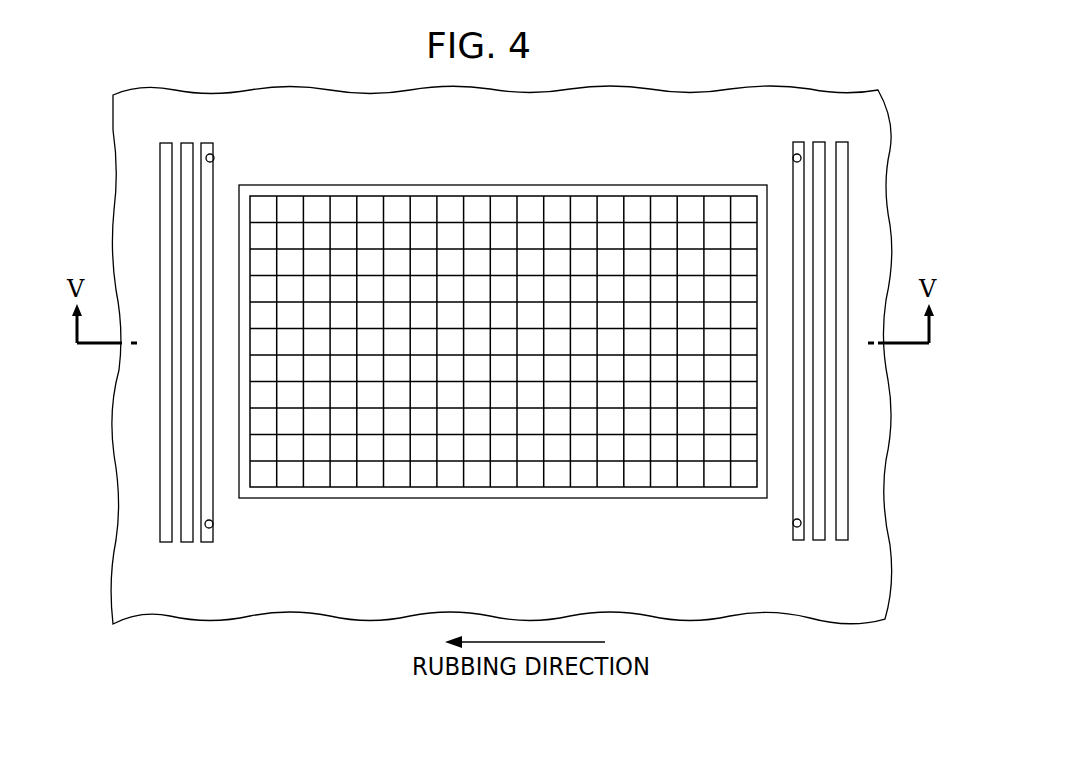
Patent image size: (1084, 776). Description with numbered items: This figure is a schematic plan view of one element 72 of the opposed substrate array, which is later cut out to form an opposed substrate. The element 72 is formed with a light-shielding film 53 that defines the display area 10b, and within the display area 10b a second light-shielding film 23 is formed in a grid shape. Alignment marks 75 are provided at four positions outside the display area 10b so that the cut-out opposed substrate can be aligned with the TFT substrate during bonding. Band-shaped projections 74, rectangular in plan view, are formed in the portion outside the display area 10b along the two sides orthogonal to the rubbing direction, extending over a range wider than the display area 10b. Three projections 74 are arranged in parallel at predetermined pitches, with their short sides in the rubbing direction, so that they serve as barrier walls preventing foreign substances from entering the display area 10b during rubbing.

The element 72 is at (725, 93).
The light-shielding film 53 is at (676, 187).
The display area 10b is at (608, 196).
The light-shielding film 23 is at (517, 232).
The projections 74 is at (207, 540).
The alignment marks 75 is at (793, 525).